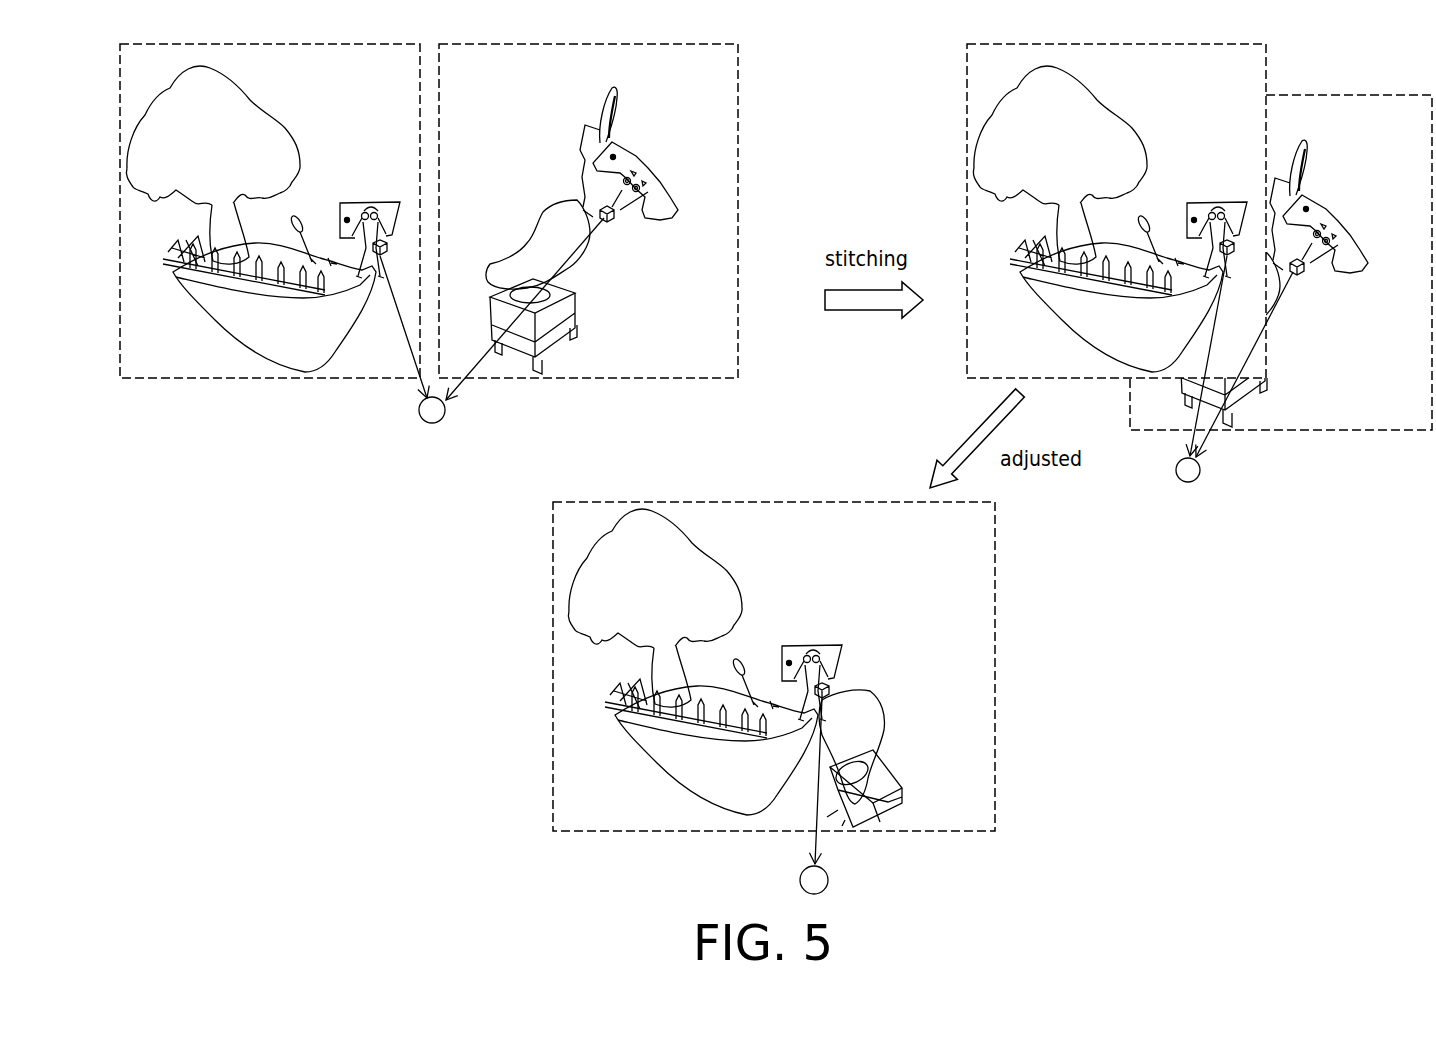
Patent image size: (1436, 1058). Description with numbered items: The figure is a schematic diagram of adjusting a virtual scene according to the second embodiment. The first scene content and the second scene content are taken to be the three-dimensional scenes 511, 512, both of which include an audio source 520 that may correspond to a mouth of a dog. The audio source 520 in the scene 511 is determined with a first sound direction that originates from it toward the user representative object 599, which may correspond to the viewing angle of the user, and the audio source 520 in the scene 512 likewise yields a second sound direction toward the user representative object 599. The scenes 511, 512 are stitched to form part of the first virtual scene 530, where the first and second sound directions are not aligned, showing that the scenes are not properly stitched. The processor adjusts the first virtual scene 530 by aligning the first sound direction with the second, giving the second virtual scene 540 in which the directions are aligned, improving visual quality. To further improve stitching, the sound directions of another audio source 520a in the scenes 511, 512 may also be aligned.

The 3D scene 511 is at (112, 127).
The 3D scene 512 is at (746, 128).
The audio source 520 is at (600, 208).
The audio source 520a is at (347, 220).
The first virtual scene 530 is at (1347, 442).
The second virtual scene 540 is at (536, 580).
The user representative object 599 is at (445, 413).